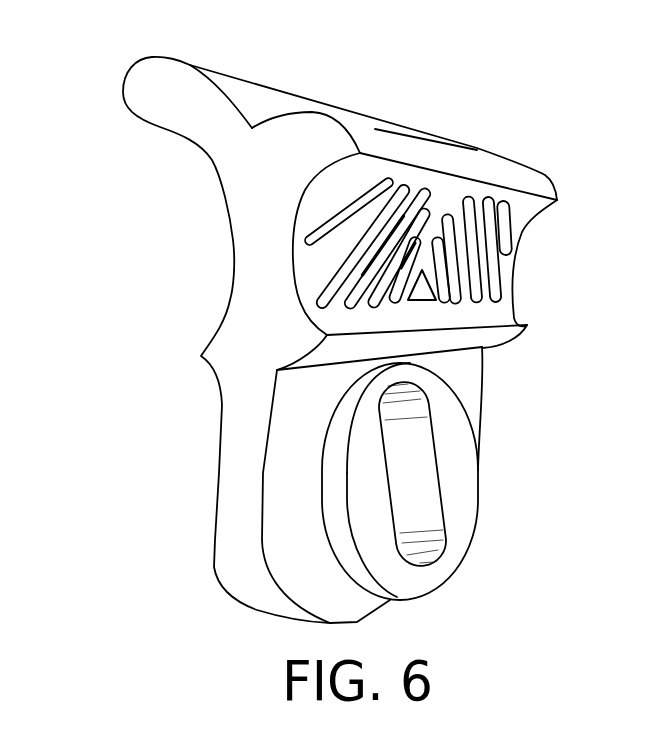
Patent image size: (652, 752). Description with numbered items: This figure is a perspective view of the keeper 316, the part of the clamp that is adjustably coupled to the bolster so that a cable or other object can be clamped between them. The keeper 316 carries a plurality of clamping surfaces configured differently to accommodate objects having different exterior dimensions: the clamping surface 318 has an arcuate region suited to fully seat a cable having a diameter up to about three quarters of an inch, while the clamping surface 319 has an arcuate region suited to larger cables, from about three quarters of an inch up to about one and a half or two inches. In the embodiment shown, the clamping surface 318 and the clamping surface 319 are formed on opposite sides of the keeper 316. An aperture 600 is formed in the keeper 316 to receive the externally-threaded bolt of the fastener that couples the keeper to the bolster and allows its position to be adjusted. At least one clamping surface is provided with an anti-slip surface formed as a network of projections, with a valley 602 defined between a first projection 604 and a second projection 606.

The keeper 316 is at (540, 131).
The clamping surface 318 is at (470, 258).
The clamping surface 319 is at (255, 197).
The aperture 600 is at (417, 468).
The valley 602 is at (313, 260).
The first projection 604 is at (378, 181).
The second projection 606 is at (402, 184).